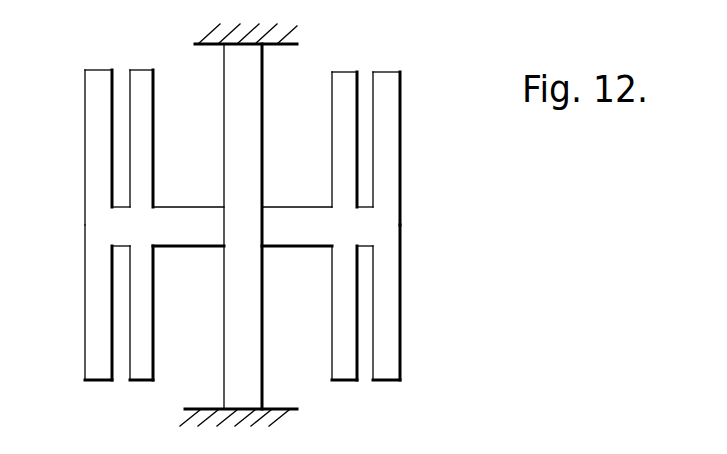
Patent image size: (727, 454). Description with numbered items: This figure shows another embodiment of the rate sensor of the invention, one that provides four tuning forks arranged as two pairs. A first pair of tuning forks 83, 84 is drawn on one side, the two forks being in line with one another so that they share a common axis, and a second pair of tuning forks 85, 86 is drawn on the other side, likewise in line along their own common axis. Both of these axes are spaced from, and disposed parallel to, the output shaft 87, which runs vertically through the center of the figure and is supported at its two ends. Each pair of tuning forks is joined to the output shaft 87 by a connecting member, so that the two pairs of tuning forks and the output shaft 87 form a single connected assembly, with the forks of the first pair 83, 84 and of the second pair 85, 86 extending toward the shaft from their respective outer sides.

The tuning fork 83 is at (397, 118).
The tuning fork 84 is at (390, 343).
The tuning fork 85 is at (96, 154).
The tuning fork 86 is at (93, 328).
The output shaft 87 is at (255, 87).